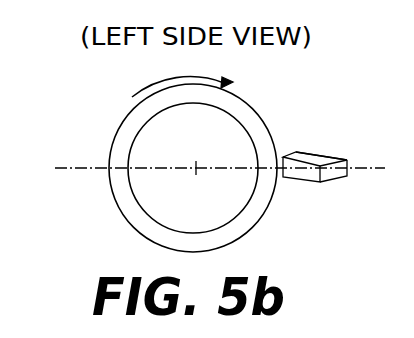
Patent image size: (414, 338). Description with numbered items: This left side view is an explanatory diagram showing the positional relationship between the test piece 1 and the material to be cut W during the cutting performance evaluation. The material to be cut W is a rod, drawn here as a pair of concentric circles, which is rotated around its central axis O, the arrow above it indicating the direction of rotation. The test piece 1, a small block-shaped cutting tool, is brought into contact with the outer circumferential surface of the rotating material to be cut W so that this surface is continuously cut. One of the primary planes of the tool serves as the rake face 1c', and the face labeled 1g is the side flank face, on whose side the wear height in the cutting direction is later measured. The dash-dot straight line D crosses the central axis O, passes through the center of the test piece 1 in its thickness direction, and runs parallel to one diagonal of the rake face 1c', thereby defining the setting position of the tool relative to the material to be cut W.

The material to be cut W is at (115, 139).
The central axis of material to be cut O is at (207, 157).
The straight line D is at (230, 169).
The test piece 1 is at (333, 183).
The side flank face 1g is at (286, 157).
The rake face 1c' is at (339, 127).